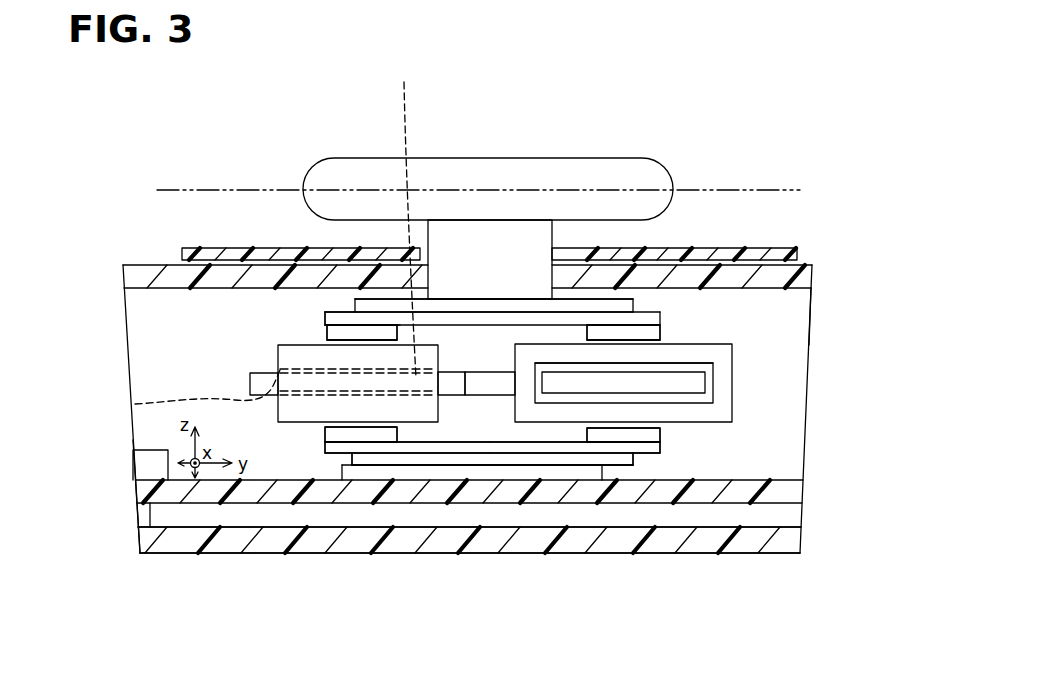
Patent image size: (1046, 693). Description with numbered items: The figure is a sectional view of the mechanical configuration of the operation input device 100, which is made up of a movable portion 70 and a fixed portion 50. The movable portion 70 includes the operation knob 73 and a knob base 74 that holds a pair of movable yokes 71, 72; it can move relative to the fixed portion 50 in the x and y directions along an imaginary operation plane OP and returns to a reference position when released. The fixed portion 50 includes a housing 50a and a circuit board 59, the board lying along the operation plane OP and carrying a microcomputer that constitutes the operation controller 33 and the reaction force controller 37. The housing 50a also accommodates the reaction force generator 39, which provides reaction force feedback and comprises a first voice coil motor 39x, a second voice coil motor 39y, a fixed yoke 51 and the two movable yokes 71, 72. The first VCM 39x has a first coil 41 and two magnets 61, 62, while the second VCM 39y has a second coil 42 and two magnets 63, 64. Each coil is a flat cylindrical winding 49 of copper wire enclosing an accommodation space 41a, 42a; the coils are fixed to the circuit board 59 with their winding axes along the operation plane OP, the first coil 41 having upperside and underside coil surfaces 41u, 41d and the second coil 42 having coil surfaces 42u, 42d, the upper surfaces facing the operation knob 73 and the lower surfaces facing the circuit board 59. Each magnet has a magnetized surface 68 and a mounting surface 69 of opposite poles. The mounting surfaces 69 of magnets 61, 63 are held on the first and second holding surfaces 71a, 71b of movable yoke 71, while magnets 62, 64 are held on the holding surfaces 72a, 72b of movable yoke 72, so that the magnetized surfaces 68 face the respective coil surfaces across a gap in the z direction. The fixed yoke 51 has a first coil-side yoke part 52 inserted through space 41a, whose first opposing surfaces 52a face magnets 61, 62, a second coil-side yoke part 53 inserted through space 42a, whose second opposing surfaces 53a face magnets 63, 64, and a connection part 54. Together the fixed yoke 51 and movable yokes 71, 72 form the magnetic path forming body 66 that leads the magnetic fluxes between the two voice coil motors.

The operation input device 100 is at (673, 147).
The operation knob 73 is at (667, 170).
The movable portion 70 is at (483, 158).
The movable yoke 71 is at (327, 320).
The first holding surface 71a is at (683, 320).
The second holding surface 71b is at (326, 320).
The magnetic path forming body 66 is at (355, 382).
The reaction force generator 39 is at (747, 320).
The first voice coil motor 39x is at (707, 249).
The second voice coil motor 39y is at (281, 436).
The knob base 74 is at (533, 312).
The mounting surface 69 is at (346, 327).
The magnet 63 is at (388, 333).
The magnet 61 is at (595, 328).
The upperside coil surface 42u is at (327, 333).
The upperside coil surface 41u is at (662, 333).
The underside coil surface 42d is at (323, 432).
The underside coil surface 41d is at (662, 436).
The second coil 42 is at (278, 360).
The first coil 41 is at (733, 360).
The winding 49 is at (479, 379).
The accommodation space 42a is at (404, 217).
The accommodation space 41a is at (645, 364).
The fixed yoke 51 is at (250, 390).
The second coil-side yoke part 53 is at (487, 398).
The second opposing surface 53a is at (302, 368).
The connection part 54 is at (488, 372).
The first coil-side yoke part 52 is at (690, 380).
The first opposing surface 52a is at (708, 368).
The movable yoke 72 is at (440, 455).
The first holding surface 72a is at (660, 453).
The second holding surface 72b is at (324, 448).
The magnetized surface 68 is at (432, 455).
The magnet 64 is at (390, 455).
The magnet 62 is at (633, 466).
The operation controller 33 is at (152, 450).
The reaction force controller 37 is at (109, 454).
The fixed portion 50 is at (188, 555).
The housing 50a is at (783, 555).
The circuit board 59 is at (155, 555).
The operation plane OP is at (197, 190).